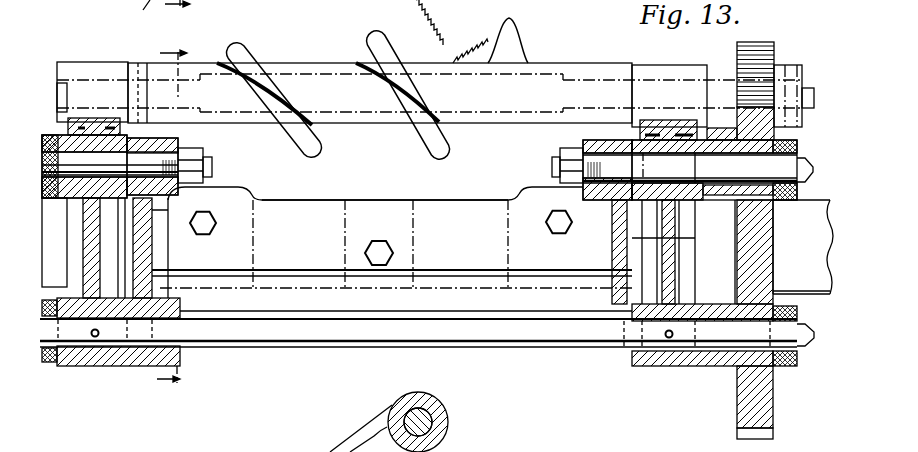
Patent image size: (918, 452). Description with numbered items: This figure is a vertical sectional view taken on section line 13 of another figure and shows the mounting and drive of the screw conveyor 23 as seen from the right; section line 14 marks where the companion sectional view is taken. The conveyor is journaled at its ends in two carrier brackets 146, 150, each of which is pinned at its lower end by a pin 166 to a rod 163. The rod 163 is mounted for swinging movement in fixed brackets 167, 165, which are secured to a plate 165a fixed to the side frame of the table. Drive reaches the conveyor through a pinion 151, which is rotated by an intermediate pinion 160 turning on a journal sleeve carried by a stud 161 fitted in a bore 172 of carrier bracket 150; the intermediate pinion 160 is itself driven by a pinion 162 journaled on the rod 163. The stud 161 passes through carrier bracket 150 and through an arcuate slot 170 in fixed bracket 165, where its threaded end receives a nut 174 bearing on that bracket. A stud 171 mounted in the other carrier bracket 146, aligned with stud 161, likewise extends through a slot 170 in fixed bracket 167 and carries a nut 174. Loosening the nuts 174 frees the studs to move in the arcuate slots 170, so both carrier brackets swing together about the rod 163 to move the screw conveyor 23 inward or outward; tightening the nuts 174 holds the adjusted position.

The section line 13— 13 is at (166, 14).
The section line 14— 14 is at (175, 218).
The screw conveyor 23 is at (396, 128).
The carrier bracket 146 is at (95, 337).
The carrier bracket 150 is at (669, 338).
The pinion 151 is at (764, 70).
The intermediate pinion 160 is at (759, 132).
The stud 161 is at (766, 175).
The pinion 162 is at (755, 389).
The rod 163 is at (564, 338).
The fixed bracket 165 is at (612, 247).
The plate 165a is at (410, 189).
The pin 166 is at (120, 366).
The fixed bracket 167 is at (140, 279).
The arcuate slot 170 is at (137, 160).
The stud 171 is at (167, 167).
The bore 172 is at (664, 138).
The nut 174 is at (197, 183).